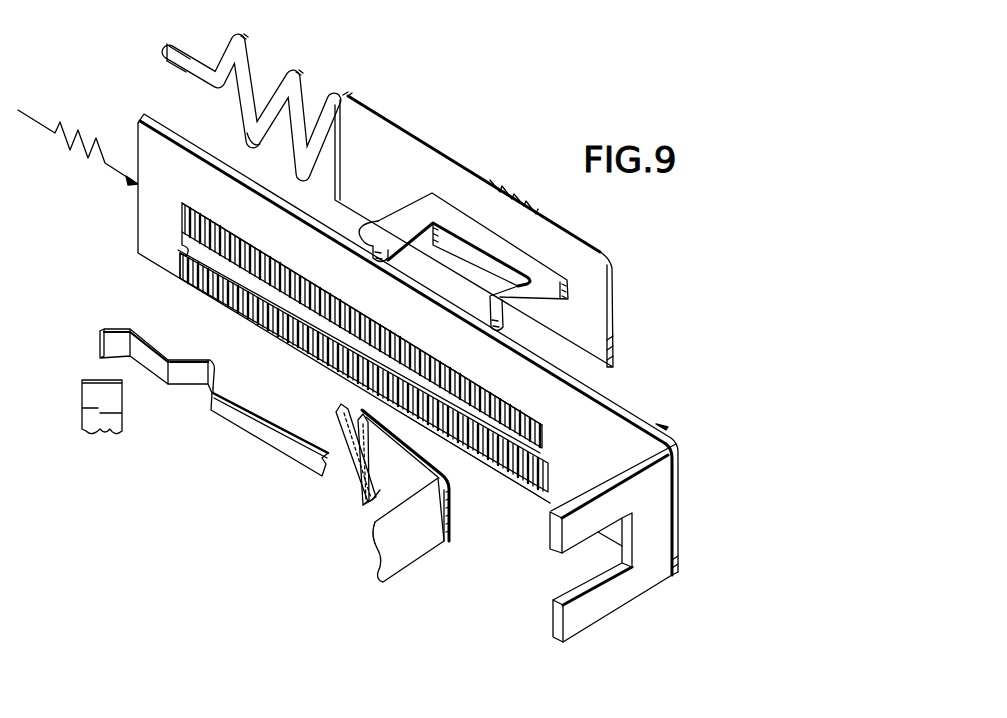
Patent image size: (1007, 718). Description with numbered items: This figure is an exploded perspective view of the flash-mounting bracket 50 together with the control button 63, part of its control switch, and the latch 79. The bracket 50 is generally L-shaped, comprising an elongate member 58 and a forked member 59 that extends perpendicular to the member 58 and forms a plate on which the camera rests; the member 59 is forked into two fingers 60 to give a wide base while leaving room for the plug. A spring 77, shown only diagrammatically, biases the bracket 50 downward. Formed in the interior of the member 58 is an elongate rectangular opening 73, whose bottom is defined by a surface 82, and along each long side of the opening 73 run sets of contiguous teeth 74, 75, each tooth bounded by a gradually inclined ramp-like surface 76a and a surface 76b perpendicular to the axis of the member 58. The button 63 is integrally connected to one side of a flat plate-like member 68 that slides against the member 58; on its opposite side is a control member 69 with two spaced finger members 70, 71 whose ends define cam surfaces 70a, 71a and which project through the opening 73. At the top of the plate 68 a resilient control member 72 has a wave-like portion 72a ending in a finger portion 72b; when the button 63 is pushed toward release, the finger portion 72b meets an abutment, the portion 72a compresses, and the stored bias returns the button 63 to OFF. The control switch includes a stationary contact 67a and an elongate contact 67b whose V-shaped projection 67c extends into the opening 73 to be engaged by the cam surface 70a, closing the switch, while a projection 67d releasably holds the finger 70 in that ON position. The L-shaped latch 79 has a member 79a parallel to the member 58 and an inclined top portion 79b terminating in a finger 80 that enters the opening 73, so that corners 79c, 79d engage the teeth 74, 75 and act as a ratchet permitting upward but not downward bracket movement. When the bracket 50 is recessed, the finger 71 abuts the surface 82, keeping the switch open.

The flash-mounting bracket 50 is at (664, 427).
The elongate member 58 is at (615, 410).
The forked member 59 is at (660, 522).
The fingers 60 is at (556, 545).
The control button 63 is at (510, 182).
The stationary contact 67a is at (95, 378).
The elongate contact 67b is at (110, 326).
The V-shaped projection 67c is at (208, 333).
The projection 67d is at (215, 372).
The plate-like member 68 is at (588, 243).
The control member 69 is at (487, 235).
The finger member 70 is at (400, 218).
The cam surface 70a is at (400, 214).
The finger member 71 is at (540, 318).
The cam surface 71a is at (520, 335).
The control member 72 is at (291, 68).
The wave-like portion 72a is at (245, 138).
The finger portion 72b is at (186, 46).
The opening 73 is at (178, 248).
The teeth 74 is at (497, 395).
The teeth 75 is at (508, 482).
The ramp-like surfaces 76a is at (400, 330).
The surface 76b is at (405, 345).
The spring 77 is at (58, 128).
The latch 79 is at (416, 563).
The member 79a is at (372, 518).
The top portion 79b is at (380, 489).
The corner 79c is at (372, 426).
The corner 79d is at (358, 472).
The finger 80 is at (336, 409).
The surface 82 is at (549, 464).